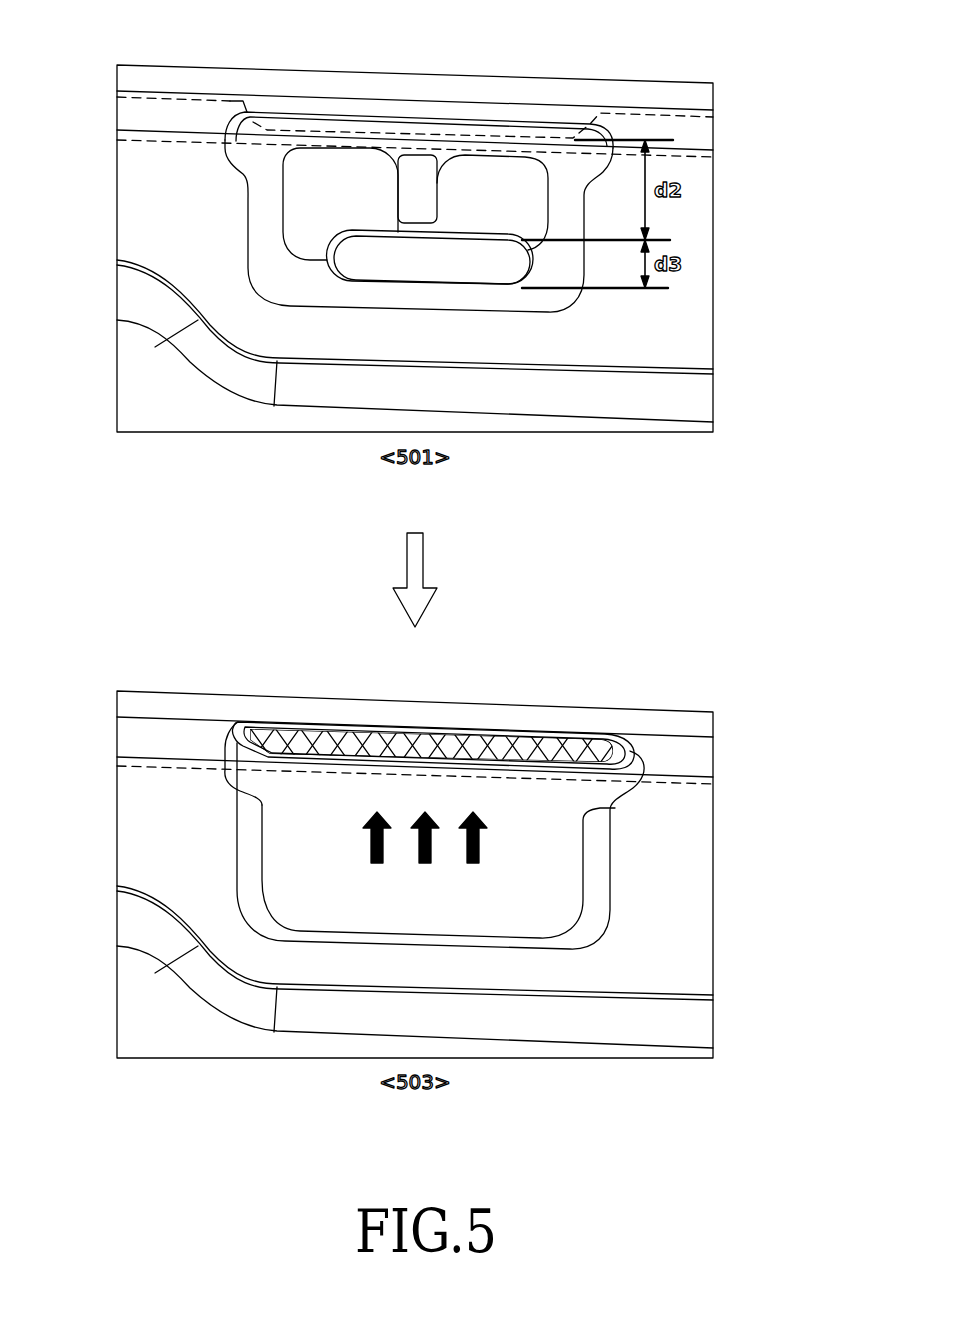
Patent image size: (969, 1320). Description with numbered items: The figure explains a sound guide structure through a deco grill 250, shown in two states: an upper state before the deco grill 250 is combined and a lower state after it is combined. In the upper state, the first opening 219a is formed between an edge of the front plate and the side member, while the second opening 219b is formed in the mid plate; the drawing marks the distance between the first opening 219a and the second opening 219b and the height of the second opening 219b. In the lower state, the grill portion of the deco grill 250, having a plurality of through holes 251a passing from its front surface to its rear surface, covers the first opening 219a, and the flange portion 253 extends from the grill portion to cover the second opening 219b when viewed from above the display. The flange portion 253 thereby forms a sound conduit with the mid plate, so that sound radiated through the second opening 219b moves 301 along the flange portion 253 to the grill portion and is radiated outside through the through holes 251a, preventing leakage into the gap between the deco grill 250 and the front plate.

The first opening 219a is at (403, 134).
The second opening 219b is at (488, 262).
The deco grill 250 is at (617, 743).
The through holes 251a is at (518, 736).
The flange portion 253 is at (567, 902).
The sound movement 301 is at (373, 847).